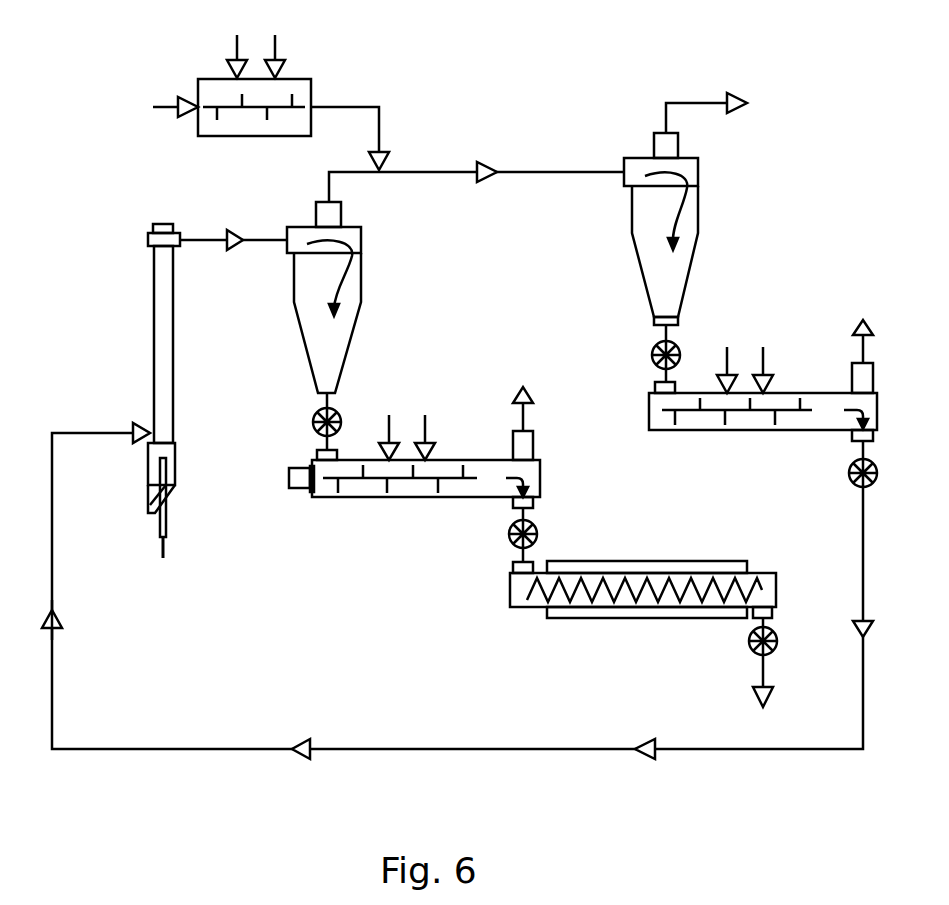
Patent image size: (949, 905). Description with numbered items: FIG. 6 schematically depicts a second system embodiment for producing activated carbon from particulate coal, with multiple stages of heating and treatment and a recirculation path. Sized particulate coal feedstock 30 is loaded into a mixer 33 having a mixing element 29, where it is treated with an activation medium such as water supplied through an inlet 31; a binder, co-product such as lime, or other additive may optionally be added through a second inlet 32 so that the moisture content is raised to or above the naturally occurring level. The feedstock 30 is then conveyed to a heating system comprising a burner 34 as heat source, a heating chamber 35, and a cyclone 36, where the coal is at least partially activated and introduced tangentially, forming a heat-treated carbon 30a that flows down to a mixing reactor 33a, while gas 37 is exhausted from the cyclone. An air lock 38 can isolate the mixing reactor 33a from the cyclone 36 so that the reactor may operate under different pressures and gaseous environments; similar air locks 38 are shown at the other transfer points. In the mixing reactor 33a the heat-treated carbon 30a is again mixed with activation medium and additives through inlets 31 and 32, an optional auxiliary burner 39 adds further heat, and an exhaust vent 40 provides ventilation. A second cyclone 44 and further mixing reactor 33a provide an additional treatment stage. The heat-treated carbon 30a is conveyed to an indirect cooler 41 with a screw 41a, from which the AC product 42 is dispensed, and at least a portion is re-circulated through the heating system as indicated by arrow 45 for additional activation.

The mixing element 29 is at (210, 108).
The particulate coal feedstock 30 is at (163, 100).
The heat-treated carbon 30a is at (587, 334).
The inlet 31 is at (235, 50).
The inlet 32 is at (279, 50).
The mixer 33 is at (250, 142).
The mixing reactor 33a is at (390, 498).
The burner 34 is at (176, 460).
The heating chamber 35 is at (174, 334).
The cyclone 36 is at (365, 272).
The gas 37 is at (703, 98).
The air lock 38 is at (313, 421).
The auxiliary burner 39 is at (300, 489).
The exhaust vent 40 is at (530, 412).
The indirect cooler 41 is at (685, 560).
The screw 41a is at (525, 607).
The AC product 42 is at (760, 678).
The second cyclone separator 44 is at (702, 203).
The arrow 45 is at (478, 747).